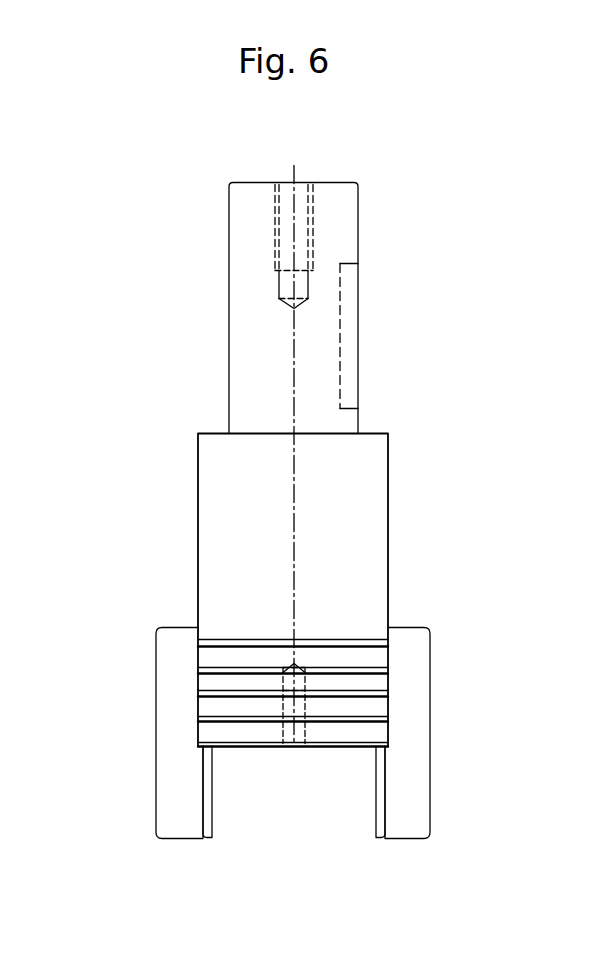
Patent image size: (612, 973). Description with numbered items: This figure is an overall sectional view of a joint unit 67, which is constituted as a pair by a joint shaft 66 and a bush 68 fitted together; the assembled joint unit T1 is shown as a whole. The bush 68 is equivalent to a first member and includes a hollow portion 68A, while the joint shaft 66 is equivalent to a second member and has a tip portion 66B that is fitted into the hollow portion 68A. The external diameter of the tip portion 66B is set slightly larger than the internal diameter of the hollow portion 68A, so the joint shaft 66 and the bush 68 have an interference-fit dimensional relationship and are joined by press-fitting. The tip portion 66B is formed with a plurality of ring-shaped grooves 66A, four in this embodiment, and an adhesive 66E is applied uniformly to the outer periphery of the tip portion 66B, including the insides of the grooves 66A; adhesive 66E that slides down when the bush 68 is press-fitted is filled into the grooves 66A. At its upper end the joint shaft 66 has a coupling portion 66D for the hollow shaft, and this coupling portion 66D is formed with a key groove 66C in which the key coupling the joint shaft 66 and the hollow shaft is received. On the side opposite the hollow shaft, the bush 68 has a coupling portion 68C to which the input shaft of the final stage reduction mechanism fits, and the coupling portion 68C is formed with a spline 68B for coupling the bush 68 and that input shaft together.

The tool T1 is at (462, 417).
The joint shaft 66 is at (355, 462).
The ring-shaped grooves 66A is at (385, 692).
The tip portion 66B is at (187, 683).
The key groove 66C is at (350, 339).
The coupling portion 66D is at (386, 257).
The adhesive 66E is at (388, 645).
The joint unit 67 is at (455, 505).
The bush 68 is at (408, 745).
The hollow portion 68A is at (387, 632).
The spline 68B is at (380, 808).
The coupling portion 68C is at (443, 820).